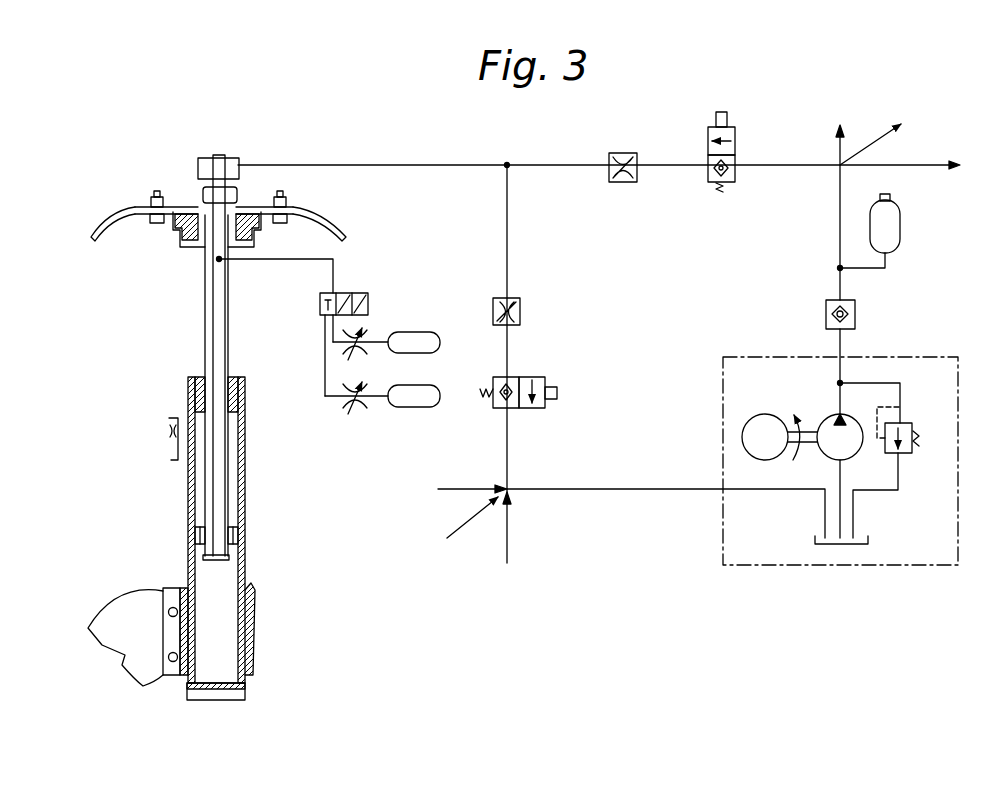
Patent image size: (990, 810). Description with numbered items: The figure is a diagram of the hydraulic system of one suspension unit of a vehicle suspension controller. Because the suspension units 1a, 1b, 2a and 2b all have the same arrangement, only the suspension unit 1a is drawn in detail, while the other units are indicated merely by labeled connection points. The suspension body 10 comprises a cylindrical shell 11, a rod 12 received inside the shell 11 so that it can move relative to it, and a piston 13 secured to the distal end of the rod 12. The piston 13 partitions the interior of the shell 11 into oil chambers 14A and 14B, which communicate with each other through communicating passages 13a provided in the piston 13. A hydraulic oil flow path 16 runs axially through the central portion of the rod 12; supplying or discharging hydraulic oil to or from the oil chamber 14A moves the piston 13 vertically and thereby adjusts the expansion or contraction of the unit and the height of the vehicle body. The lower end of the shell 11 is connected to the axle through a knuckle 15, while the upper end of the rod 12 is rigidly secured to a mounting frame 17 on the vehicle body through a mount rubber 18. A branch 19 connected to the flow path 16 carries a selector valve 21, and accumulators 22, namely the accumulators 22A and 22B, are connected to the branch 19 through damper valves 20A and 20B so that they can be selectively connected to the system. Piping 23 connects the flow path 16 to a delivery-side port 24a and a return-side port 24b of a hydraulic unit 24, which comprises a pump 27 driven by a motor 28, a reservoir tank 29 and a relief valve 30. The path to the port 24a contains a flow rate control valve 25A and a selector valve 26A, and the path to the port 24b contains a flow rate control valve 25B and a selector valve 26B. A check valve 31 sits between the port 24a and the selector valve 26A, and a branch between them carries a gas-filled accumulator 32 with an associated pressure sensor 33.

The suspension unit 1a is at (265, 152).
The suspension unit 1b is at (636, 299).
The suspension unit 2a is at (672, 330).
The suspension unit 2b is at (508, 579).
The suspension body 10 is at (186, 502).
The shell 11 is at (187, 561).
The rod 12 is at (205, 362).
The piston 13 is at (240, 540).
The communicating passages 13a is at (197, 538).
The oil chamber 14A is at (232, 637).
The oil chamber 14B is at (233, 476).
The knuckle 15 is at (126, 616).
The hydraulic oil flow path 16 is at (212, 330).
The mounting frame 17 is at (138, 208).
The mount rubber 18 is at (186, 215).
The branch 19 is at (247, 263).
The damper valve 20A is at (368, 330).
The damper valve 20B is at (360, 406).
The selector valve 21 is at (370, 293).
The accumulators 22 is at (455, 400).
The accumulator 22A is at (440, 334).
The accumulator 22B is at (440, 386).
The piping 23 is at (440, 164).
The hydraulic unit 24 is at (938, 357).
The delivery-side port 24a is at (843, 372).
The return-side port 24b is at (811, 491).
The flow rate control valve 25A is at (625, 153).
The flow rate control valve 25B is at (523, 308).
The selector valve 26A is at (737, 141).
The selector valve 26B is at (548, 378).
The pump 27 is at (830, 415).
The motor 28 is at (768, 414).
The reservoir tank 29 is at (870, 540).
The relief valve 30 is at (915, 424).
The check valve 31 is at (855, 314).
The accumulator 32 is at (903, 238).
The pressure sensor 33 is at (891, 197).